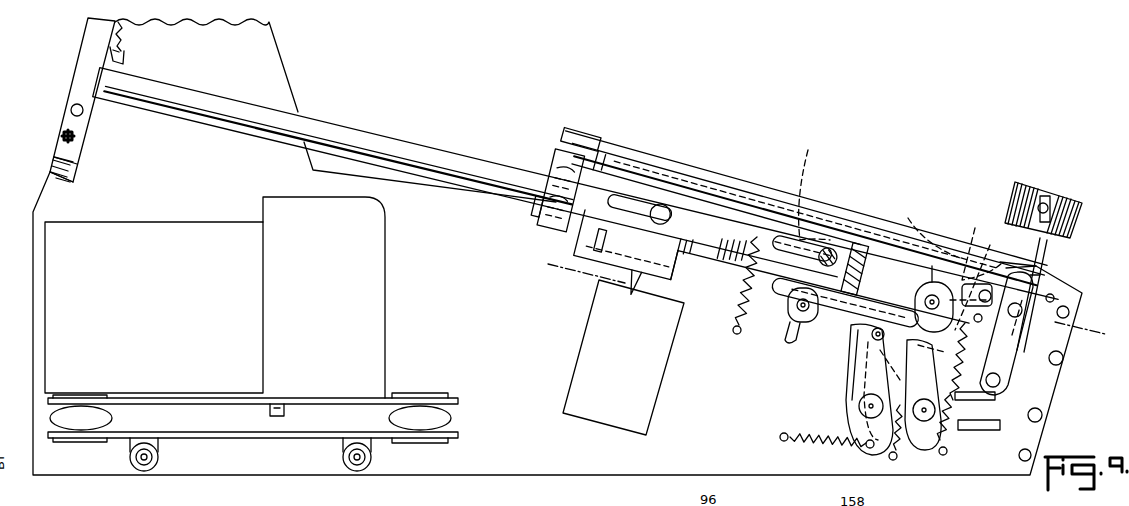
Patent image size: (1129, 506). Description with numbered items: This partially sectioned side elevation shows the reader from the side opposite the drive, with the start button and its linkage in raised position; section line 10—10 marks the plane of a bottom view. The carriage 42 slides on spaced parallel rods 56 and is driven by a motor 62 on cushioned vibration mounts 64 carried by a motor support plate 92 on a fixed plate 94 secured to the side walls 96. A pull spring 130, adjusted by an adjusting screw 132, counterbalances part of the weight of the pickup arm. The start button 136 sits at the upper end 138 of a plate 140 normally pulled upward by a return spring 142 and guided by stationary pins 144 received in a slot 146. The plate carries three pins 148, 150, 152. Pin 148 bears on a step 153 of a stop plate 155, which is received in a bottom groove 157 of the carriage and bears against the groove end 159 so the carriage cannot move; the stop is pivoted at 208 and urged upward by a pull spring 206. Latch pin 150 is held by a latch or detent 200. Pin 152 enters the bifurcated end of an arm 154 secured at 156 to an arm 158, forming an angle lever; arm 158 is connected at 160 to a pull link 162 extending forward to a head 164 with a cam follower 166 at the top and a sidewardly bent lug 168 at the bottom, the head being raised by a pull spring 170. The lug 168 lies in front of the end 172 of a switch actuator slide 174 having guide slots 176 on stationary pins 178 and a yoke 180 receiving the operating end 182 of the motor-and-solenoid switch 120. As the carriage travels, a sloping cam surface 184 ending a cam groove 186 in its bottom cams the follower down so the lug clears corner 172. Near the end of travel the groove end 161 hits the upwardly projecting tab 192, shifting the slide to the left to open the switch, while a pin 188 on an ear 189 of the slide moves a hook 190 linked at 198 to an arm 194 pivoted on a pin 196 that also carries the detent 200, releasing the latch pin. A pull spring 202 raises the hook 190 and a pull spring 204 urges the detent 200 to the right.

The section line 10— 10 is at (559, 252).
The carriage 42 is at (612, 150).
The spaced parallel rods 56 is at (332, 128).
The motor 62 is at (163, 280).
The cushioned vibration mounts 64 is at (94, 418).
The motor support plate 92 is at (268, 402).
The fixed plate 94 is at (262, 440).
The side walls 96 is at (483, 338).
The motor-and-solenoid switch 120 is at (590, 342).
The pull spring 130 is at (126, 42).
The adjusting screw 132 is at (48, 162).
The start button 136 is at (1070, 198).
The upper end of plate 138 is at (1050, 250).
The plate 140 is at (1022, 418).
The return spring 142 is at (1070, 310).
The stationary pins 144 is at (1020, 312).
The slot 146 is at (1064, 352).
The pin 148 is at (969, 295).
The latch pin 150 is at (878, 330).
The pin 152 is at (992, 432).
The step 153 is at (999, 291).
The arm 154 is at (958, 432).
The stop plate 155 is at (970, 232).
The connection 156 is at (940, 452).
The bottom groove 157 is at (934, 231).
The arm 158 is at (942, 352).
The end of groove 159 is at (985, 281).
The pivot pin 160 is at (935, 298).
The abutment or groove end 161 is at (1046, 268).
The pull link 162 is at (872, 242).
The head 164 is at (562, 160).
The cam follower 166 is at (592, 150).
The sidewardly bent lug 168 is at (546, 199).
The pull spring 170 is at (966, 357).
The end of switch actuator slide 172 is at (588, 232).
The switch actuator slide 174 is at (822, 230).
The guide slots 176 is at (643, 205).
The stationary pins 178 is at (662, 208).
The yoke 180 is at (672, 260).
The operating end 182 is at (648, 283).
The sloping cam surface 184 is at (700, 188).
The cam groove 186 is at (637, 200).
The pin 188 is at (800, 325).
The ear 189 is at (798, 286).
The hook 190 is at (792, 340).
The upwardly projecting tab 192 is at (604, 170).
The arm 194 is at (858, 372).
The pin 196 is at (858, 408).
The link connection 198 is at (878, 340).
The latch or detent 200 is at (856, 346).
The pull spring 202 is at (902, 376).
The pull spring 204 is at (795, 448).
The pull spring 206 is at (748, 286).
The pivot 208 is at (815, 192).